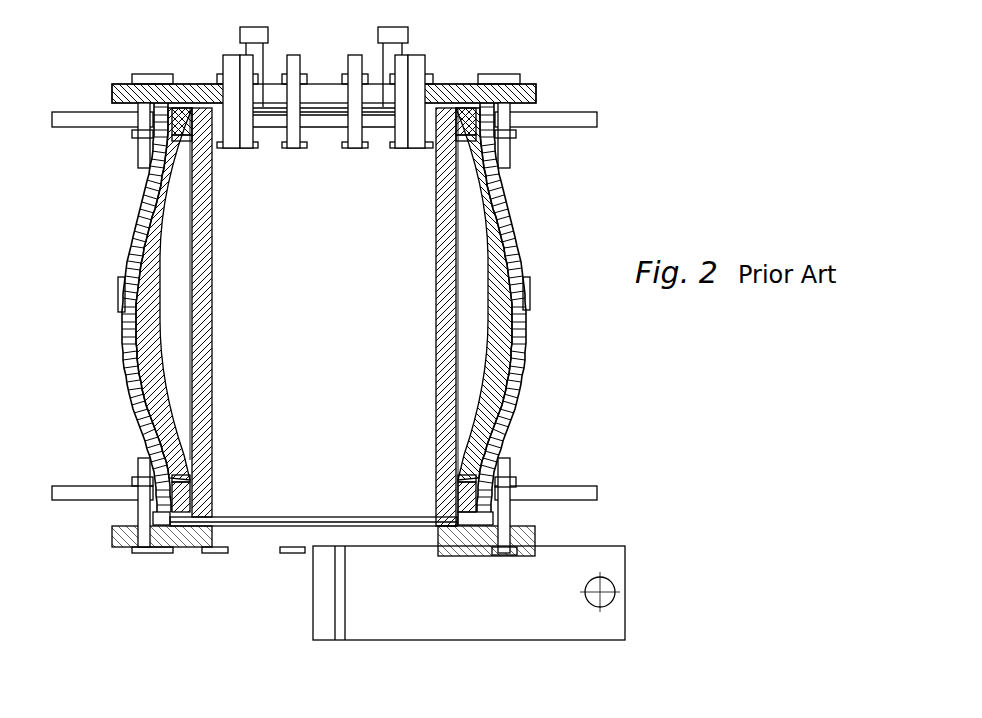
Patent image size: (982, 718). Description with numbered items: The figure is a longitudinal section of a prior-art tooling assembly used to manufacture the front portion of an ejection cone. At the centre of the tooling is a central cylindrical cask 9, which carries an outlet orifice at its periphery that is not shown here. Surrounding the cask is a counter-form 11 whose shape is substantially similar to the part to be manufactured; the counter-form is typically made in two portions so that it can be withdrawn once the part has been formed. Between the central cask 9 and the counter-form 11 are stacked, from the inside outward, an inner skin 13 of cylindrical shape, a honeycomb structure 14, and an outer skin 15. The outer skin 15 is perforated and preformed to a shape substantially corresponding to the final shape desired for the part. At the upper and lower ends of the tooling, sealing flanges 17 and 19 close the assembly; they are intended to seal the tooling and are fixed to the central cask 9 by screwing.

The sealing flange 17 is at (498, 108).
The counter-form 11 is at (505, 210).
The central cylindrical cask 9 is at (445, 258).
The outer skin 15 is at (509, 320).
The inner skin 13 is at (456, 340).
The honeycomb structure 14 is at (493, 382).
The sealing flange 19 is at (474, 483).